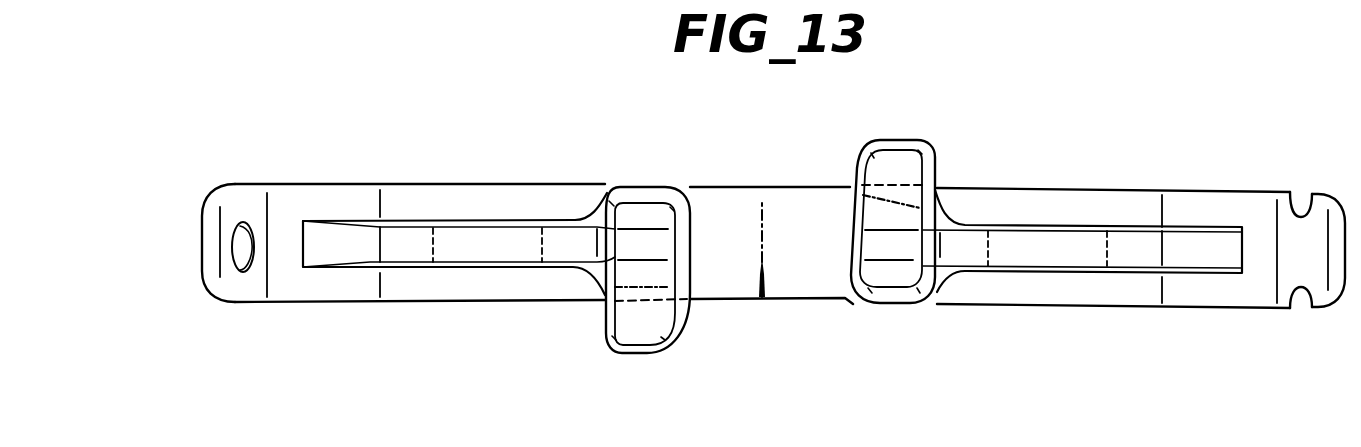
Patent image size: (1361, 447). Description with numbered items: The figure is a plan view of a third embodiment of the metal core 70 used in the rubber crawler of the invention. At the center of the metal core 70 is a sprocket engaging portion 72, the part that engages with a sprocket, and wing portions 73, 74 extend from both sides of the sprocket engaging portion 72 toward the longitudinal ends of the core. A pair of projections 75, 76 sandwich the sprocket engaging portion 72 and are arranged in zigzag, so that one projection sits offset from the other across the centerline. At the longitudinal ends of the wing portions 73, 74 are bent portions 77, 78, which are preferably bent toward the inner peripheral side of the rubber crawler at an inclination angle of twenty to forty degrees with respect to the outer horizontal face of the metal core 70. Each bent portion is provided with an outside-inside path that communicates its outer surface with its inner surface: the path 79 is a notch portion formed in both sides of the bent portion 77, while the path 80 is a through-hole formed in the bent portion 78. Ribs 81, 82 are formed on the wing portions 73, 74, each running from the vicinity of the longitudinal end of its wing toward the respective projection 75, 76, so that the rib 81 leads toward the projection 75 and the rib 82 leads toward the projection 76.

The metal core 70 is at (1133, 188).
The sprocket engaging portion 72 is at (760, 187).
The wing portion 73 is at (1040, 188).
The wing portion 74 is at (468, 183).
The projection 75 is at (913, 163).
The projection 76 is at (643, 213).
The bent portion 77 is at (1320, 193).
The bent portion 78 is at (237, 183).
The outside-inside path 79 is at (1300, 310).
The outside-inside path 80 is at (243, 272).
The rib 81 is at (1058, 250).
The rib 82 is at (480, 248).